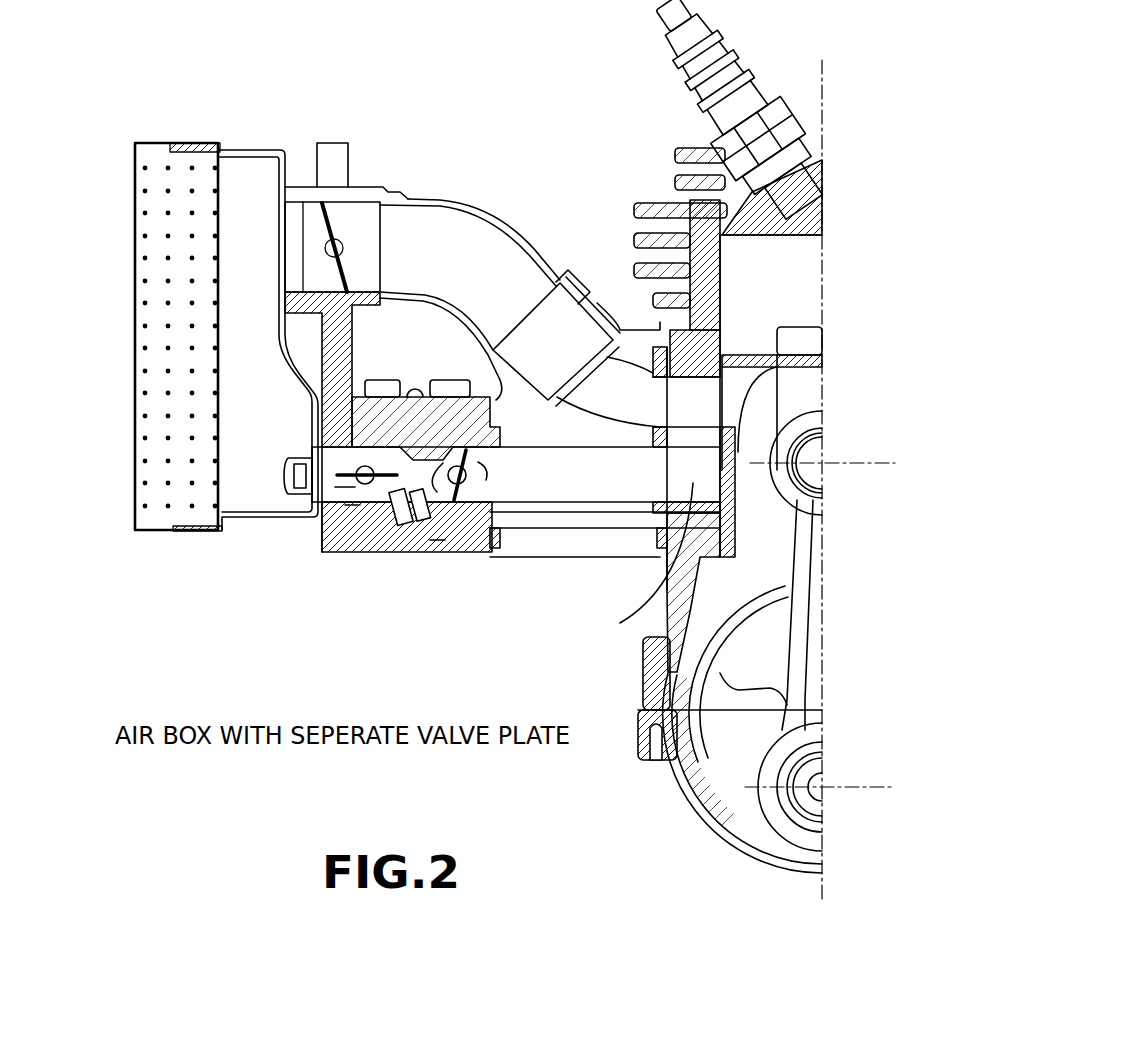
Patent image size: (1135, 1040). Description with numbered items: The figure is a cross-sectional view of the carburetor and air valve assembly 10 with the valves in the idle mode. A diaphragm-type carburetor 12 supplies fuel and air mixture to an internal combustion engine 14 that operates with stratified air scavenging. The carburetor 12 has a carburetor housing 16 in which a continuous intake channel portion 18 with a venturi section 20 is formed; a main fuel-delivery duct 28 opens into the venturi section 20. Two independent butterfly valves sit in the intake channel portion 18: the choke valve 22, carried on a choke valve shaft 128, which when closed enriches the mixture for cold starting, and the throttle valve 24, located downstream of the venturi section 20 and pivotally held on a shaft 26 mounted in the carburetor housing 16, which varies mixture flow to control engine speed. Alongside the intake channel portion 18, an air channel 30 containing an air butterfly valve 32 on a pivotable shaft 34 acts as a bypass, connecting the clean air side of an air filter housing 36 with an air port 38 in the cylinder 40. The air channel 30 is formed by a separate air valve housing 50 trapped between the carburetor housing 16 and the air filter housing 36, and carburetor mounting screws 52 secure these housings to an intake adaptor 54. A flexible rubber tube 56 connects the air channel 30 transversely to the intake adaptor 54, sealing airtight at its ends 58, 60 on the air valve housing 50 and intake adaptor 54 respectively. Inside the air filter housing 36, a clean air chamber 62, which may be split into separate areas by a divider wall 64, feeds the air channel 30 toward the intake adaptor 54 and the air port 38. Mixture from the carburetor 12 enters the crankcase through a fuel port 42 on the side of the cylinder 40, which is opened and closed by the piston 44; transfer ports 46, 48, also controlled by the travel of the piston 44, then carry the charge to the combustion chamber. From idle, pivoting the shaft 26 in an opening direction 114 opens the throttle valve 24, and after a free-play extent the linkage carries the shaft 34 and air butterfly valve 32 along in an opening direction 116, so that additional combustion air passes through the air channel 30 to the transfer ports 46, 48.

The carburetor and air valve assembly 10 is at (378, 72).
The carburetor 12 is at (385, 380).
The internal combustion engine 14 is at (812, 118).
The carburetor housing 16 is at (413, 417).
The intake channel portion 18 is at (368, 492).
The venturi section 20 is at (388, 500).
The choke valve 22 is at (340, 470).
The throttle valve 24 is at (437, 545).
The throttle valve shaft 26 is at (468, 545).
The main fuel-delivery duct 28 is at (410, 505).
The air channel 30 is at (480, 257).
The air butterfly valve 32 is at (338, 205).
The pivotable shaft 34 is at (345, 250).
The air filter housing 36 is at (200, 140).
The air port 38 is at (700, 403).
The cylinder 40 is at (650, 200).
The fuel port 42 is at (655, 622).
The piston 44 is at (740, 352).
The transfer port 46 is at (856, 323).
The transfer port 48 is at (807, 327).
The air valve housing 50 is at (332, 143).
The carburetor mounting screws 52 is at (290, 492).
The intake adaptor 54 is at (622, 560).
The flexible rubber tube 56 is at (510, 220).
The tube end 58 is at (408, 197).
The tube end 60 is at (580, 282).
The clean air chamber 62 is at (232, 308).
The divider wall 64 is at (253, 343).
The opening direction 114 is at (490, 482).
The opening direction 116 is at (317, 262).
The choke valve shaft 128 is at (345, 487).